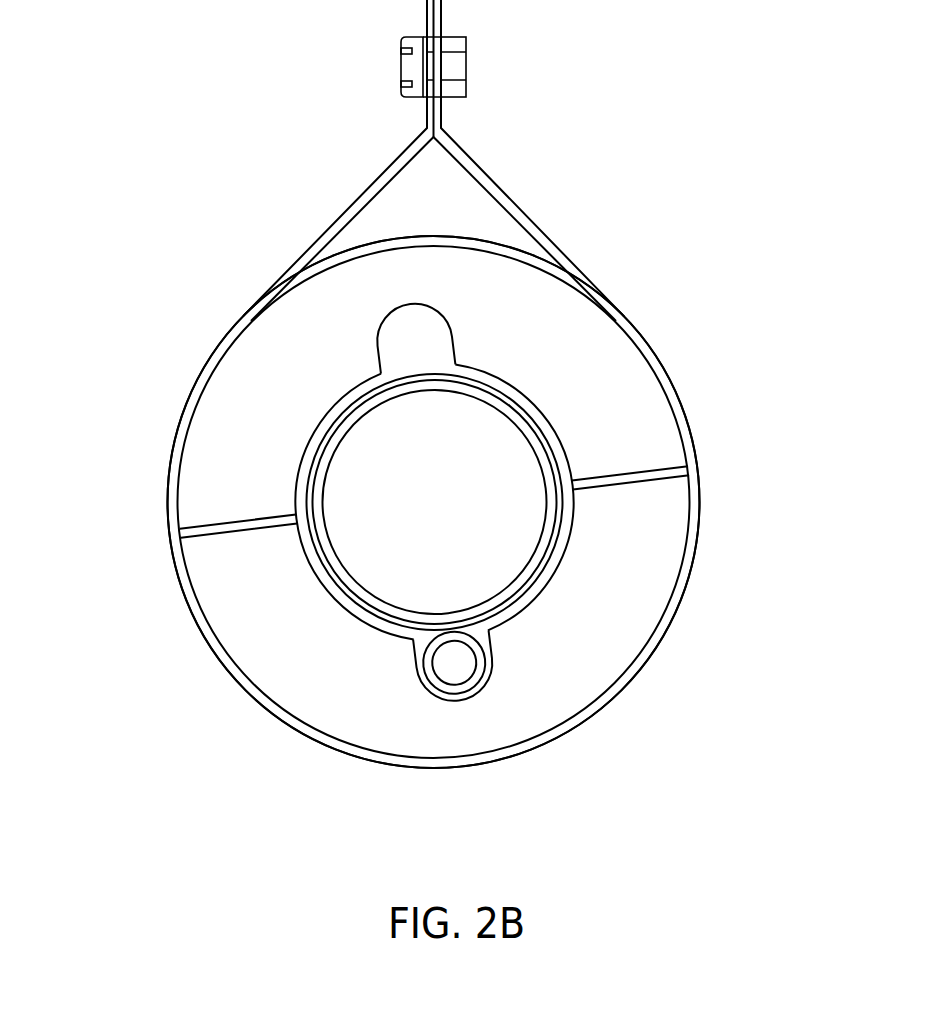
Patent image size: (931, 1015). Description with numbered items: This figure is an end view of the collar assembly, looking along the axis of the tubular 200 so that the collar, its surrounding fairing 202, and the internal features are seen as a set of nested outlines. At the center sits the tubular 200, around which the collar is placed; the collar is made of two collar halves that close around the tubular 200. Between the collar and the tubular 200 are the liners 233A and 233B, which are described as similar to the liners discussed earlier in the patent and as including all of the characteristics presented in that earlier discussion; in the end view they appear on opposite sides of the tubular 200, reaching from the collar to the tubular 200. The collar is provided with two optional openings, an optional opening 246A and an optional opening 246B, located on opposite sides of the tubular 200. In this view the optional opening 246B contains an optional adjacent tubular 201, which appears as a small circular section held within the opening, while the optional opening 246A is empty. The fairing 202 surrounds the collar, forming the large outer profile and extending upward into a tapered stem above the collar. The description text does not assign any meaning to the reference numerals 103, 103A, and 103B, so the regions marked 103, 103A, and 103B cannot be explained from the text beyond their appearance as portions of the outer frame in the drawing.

The fairing 202 is at (494, 183).
The frame 103 is at (612, 377).
The upper frame portion 103A is at (546, 333).
The lower frame portion 103B is at (315, 655).
The tubular 200 is at (530, 570).
The liner 233A is at (562, 440).
The liner 233B is at (307, 567).
The optional opening 246A is at (376, 345).
The optional opening 246B is at (420, 650).
The adjacent tubular 201 is at (480, 677).